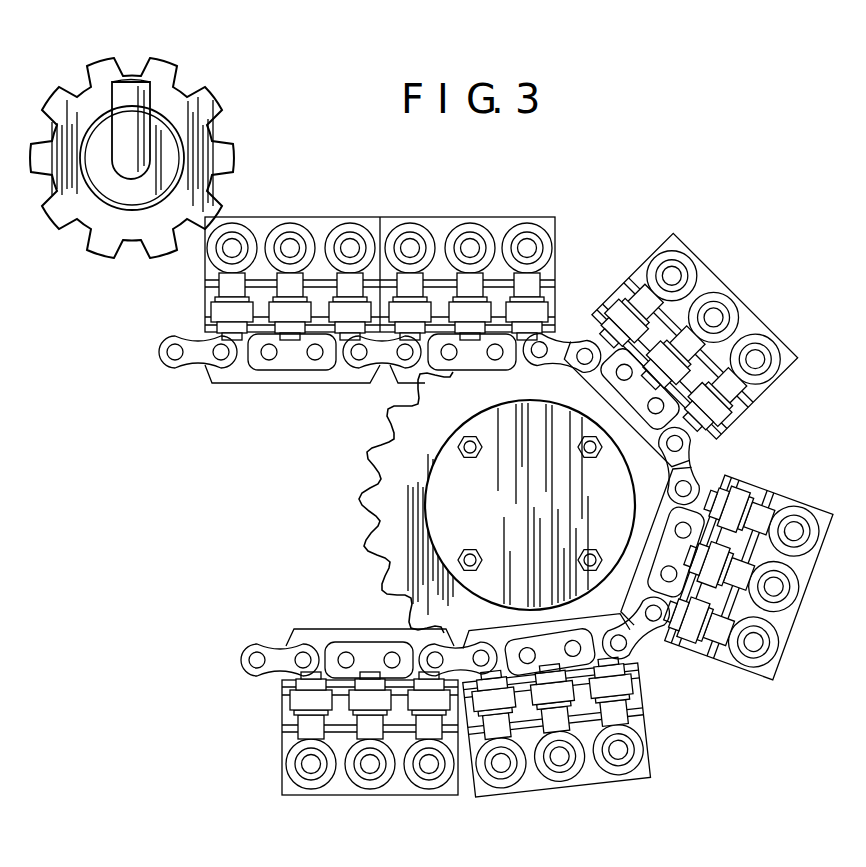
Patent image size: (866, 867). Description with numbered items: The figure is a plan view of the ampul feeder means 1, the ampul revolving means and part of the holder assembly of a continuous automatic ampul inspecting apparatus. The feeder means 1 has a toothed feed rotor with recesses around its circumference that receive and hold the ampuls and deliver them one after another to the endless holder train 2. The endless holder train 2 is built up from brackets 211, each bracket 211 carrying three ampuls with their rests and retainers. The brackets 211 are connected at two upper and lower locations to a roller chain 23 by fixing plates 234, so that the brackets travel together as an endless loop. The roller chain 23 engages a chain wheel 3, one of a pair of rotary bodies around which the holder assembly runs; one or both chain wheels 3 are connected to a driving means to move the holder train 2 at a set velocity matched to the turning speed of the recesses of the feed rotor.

The feeder means 1 is at (222, 130).
The endless holder train 2 is at (556, 223).
The bracket 211 is at (606, 310).
The fixing plate 234 is at (481, 357).
The roller chain 23 is at (456, 505).
The chain wheel 3 is at (380, 541).